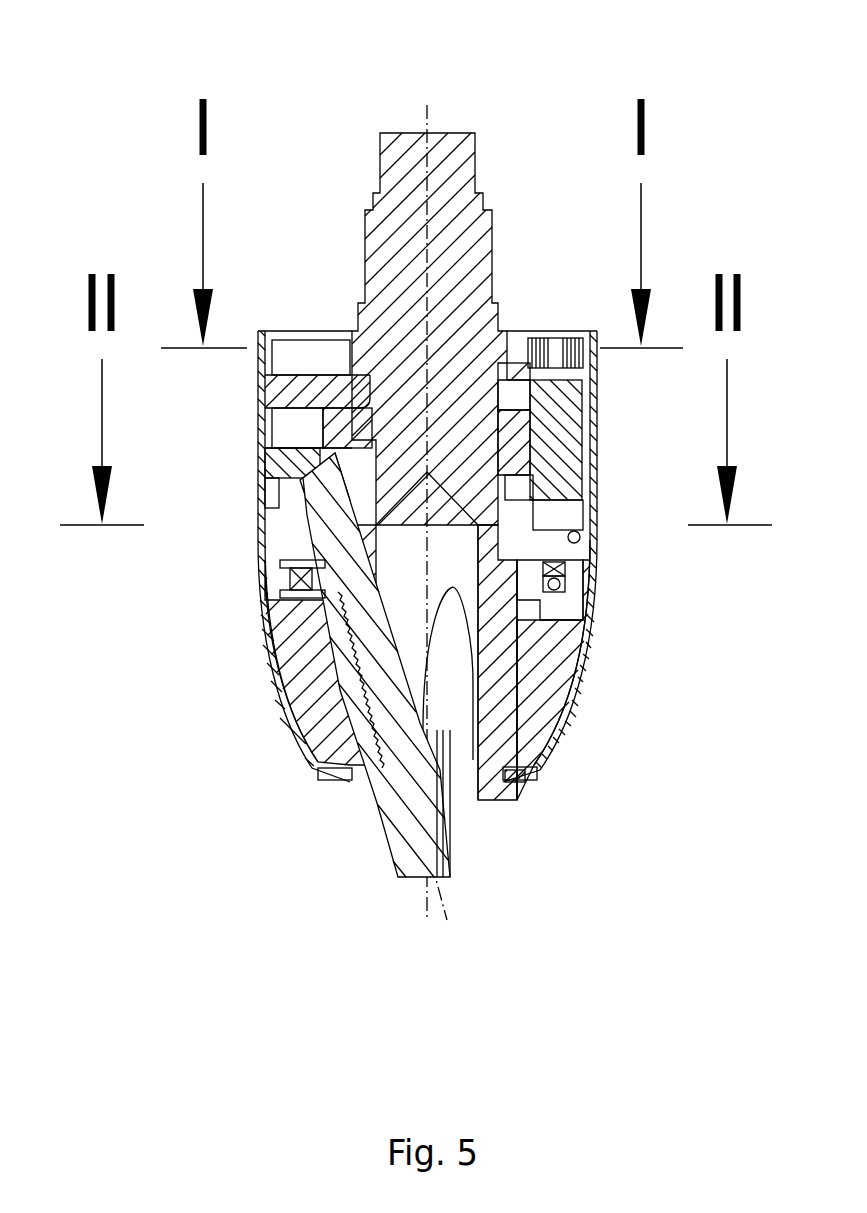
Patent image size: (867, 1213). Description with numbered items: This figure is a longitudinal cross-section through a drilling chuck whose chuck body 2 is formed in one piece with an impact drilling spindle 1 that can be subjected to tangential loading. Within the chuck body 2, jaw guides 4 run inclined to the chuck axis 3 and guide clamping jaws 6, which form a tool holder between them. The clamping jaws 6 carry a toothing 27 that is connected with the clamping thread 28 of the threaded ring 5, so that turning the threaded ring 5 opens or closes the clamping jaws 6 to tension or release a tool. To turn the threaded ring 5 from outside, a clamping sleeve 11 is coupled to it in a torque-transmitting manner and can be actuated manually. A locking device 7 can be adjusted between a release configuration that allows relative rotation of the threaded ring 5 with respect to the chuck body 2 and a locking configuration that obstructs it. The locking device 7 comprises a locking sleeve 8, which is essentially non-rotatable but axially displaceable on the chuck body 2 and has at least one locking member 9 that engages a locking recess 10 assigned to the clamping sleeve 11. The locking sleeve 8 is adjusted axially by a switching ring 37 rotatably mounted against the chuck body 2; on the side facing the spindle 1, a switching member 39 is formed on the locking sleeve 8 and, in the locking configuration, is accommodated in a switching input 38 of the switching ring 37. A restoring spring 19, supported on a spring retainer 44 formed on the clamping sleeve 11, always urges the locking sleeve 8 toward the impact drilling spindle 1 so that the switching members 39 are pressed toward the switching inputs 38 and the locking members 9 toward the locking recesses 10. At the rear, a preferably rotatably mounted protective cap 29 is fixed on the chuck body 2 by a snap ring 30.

The impact drilling spindle 1 is at (445, 267).
The chuck body 2 is at (497, 752).
The chuck axis 3 is at (427, 112).
The jaw guides 4 is at (350, 548).
The threaded ring 5 is at (550, 613).
The clamping jaws 6 is at (400, 810).
The locking device 7 is at (268, 486).
The locking sleeve 8 is at (550, 488).
The locking member 9 is at (580, 528).
The locking recess 10 is at (268, 513).
The clamping sleeve 11 is at (550, 705).
The restoring spring 19 is at (580, 570).
The toothing 27 is at (360, 703).
The clamping thread 28 is at (332, 603).
The protective cap 29 is at (540, 777).
The snap ring 30 is at (513, 782).
The switching ring 37 is at (592, 380).
The switching input 38 is at (592, 419).
The switching member 39 is at (592, 456).
The spring retainer 44 is at (583, 598).